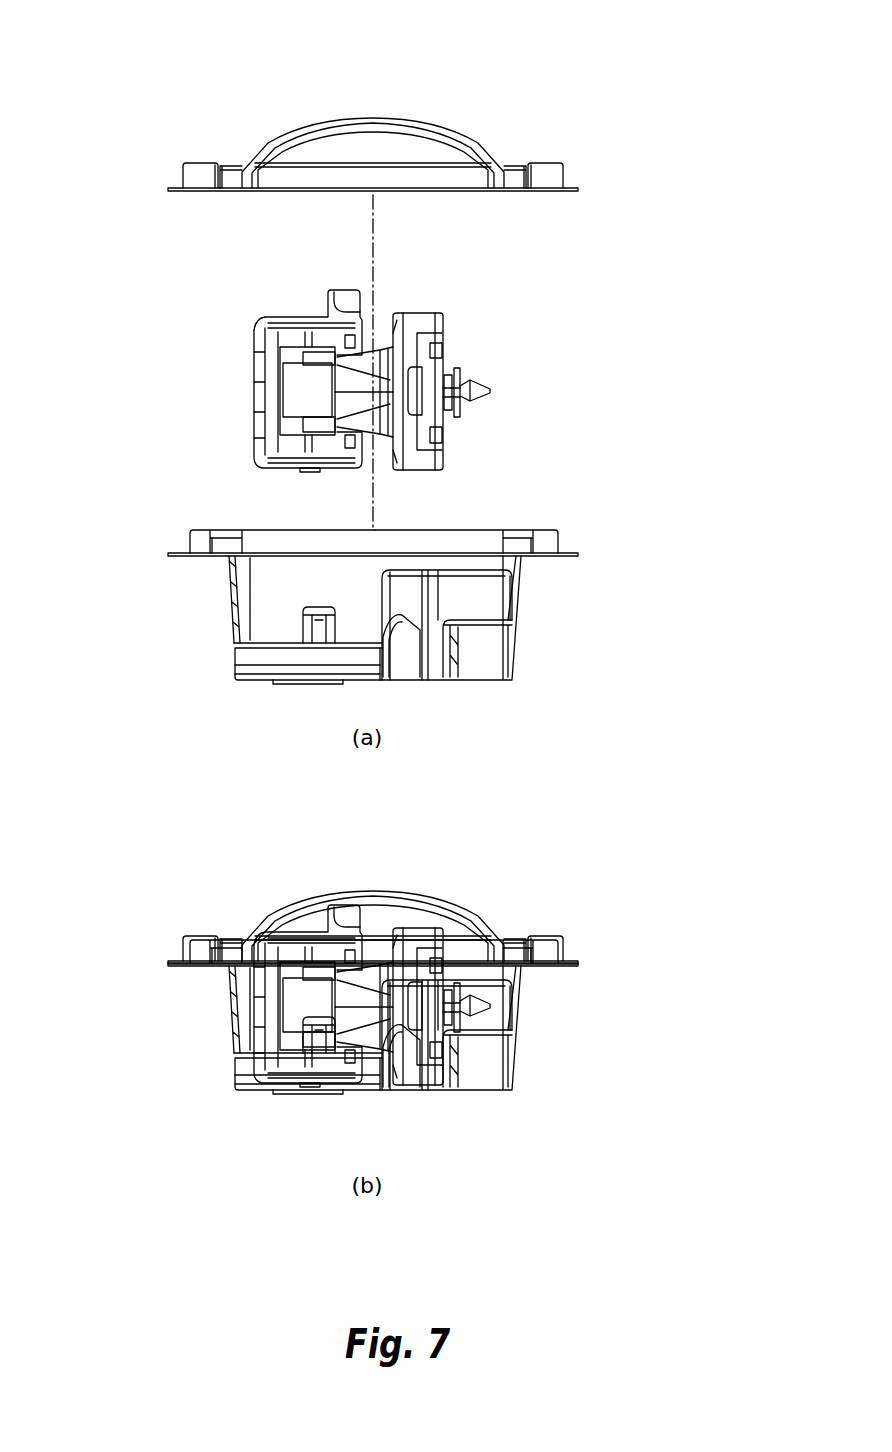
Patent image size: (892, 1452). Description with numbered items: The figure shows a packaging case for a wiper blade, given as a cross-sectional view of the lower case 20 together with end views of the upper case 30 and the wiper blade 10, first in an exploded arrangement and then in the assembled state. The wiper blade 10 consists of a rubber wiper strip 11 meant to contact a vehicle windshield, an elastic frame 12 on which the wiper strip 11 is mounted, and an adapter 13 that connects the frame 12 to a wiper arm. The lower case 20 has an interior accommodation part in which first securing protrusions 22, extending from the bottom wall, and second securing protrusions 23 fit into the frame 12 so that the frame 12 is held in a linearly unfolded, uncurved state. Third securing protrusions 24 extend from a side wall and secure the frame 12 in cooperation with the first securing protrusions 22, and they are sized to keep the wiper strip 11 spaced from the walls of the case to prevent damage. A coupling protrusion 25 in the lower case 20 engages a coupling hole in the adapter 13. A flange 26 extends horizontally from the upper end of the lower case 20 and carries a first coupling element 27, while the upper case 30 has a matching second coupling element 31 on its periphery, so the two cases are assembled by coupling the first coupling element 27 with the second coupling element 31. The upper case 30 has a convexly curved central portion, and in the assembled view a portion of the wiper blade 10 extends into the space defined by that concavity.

The wiper blade 10 is at (332, 363).
The wiper strip 11 is at (484, 393).
The frame 12 is at (430, 372).
The adapter 13 is at (253, 407).
The lower case 20 is at (373, 596).
The first securing protrusions 22 is at (400, 610).
The second securing protrusions 23 is at (478, 568).
The third securing protrusions 24 is at (478, 618).
The coupling protrusion 25 is at (280, 623).
The flange 26 is at (563, 554).
The first coupling element 27 is at (200, 531).
The upper case 30 is at (373, 107).
The second coupling element 31 is at (202, 163).